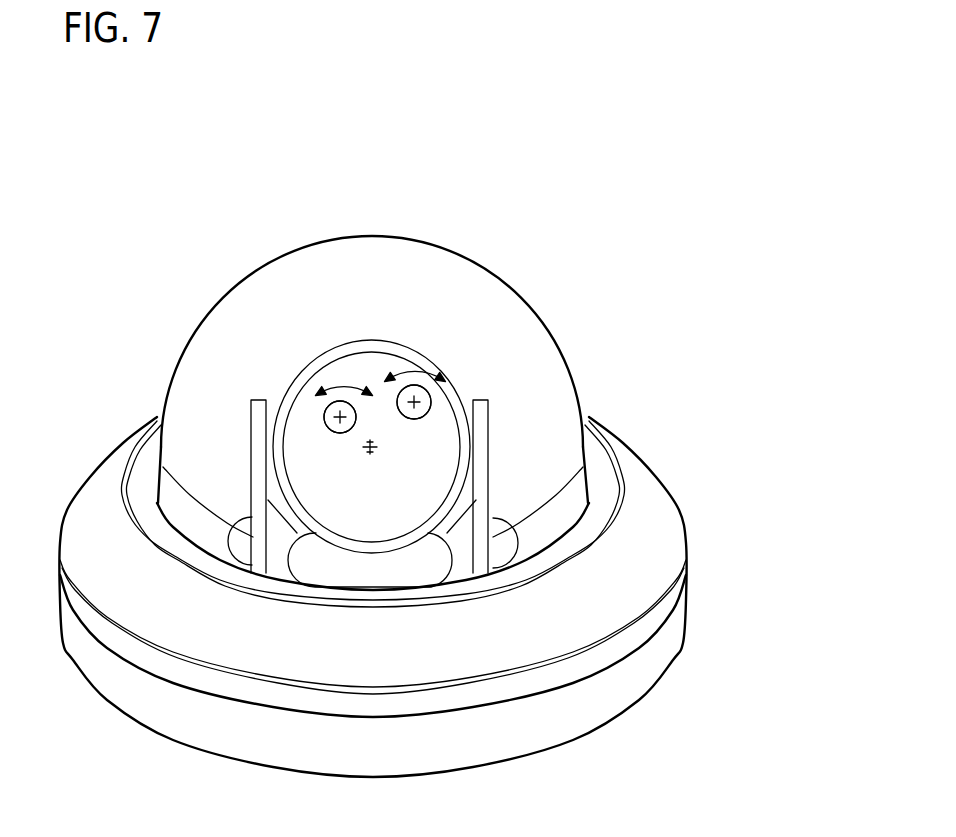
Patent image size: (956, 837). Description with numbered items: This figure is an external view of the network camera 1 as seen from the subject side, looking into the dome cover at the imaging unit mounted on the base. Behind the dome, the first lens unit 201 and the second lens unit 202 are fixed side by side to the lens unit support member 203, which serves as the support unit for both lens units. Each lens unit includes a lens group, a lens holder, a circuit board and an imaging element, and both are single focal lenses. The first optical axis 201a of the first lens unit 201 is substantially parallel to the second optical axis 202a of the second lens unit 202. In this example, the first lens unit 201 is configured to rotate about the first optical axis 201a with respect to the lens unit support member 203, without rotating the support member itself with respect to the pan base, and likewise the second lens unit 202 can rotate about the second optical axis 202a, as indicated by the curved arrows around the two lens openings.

The network camera 1 is at (768, 106).
The first lens unit 201 is at (343, 396).
The first optical axis 201a is at (343, 418).
The second lens unit 202 is at (419, 378).
The second optical axis 202a is at (418, 403).
The lens unit support member 203 is at (422, 475).